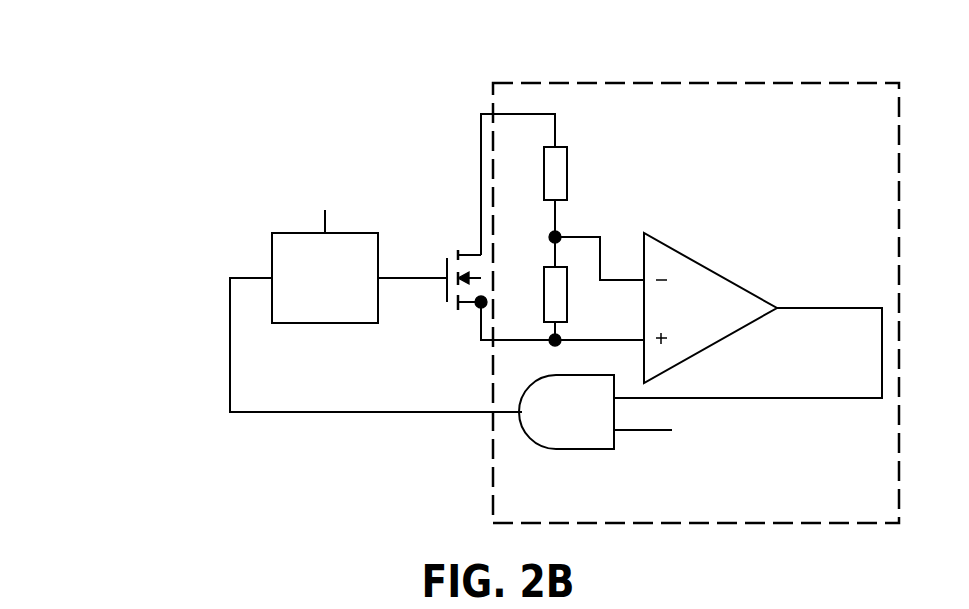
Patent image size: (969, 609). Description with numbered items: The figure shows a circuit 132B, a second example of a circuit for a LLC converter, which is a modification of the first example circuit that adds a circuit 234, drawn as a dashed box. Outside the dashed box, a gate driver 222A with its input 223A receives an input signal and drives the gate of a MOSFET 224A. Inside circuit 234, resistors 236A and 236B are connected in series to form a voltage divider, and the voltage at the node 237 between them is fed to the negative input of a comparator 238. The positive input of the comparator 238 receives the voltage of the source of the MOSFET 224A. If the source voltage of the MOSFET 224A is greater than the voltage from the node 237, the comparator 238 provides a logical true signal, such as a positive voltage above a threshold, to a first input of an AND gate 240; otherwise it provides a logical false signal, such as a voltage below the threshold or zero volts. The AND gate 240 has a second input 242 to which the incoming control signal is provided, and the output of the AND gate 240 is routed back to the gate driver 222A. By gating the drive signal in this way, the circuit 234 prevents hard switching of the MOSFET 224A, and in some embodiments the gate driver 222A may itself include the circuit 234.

The circuit 132B is at (103, 79).
The circuit 234 is at (770, 83).
The gate driver 222A is at (347, 296).
The input 223A is at (328, 218).
The MOSFET 224A is at (445, 266).
The resistor 236A is at (567, 173).
The resistor 236B is at (567, 287).
The node 237 is at (551, 237).
The comparator 238 is at (700, 268).
The AND gate 240 is at (557, 449).
The second input 242 is at (642, 430).